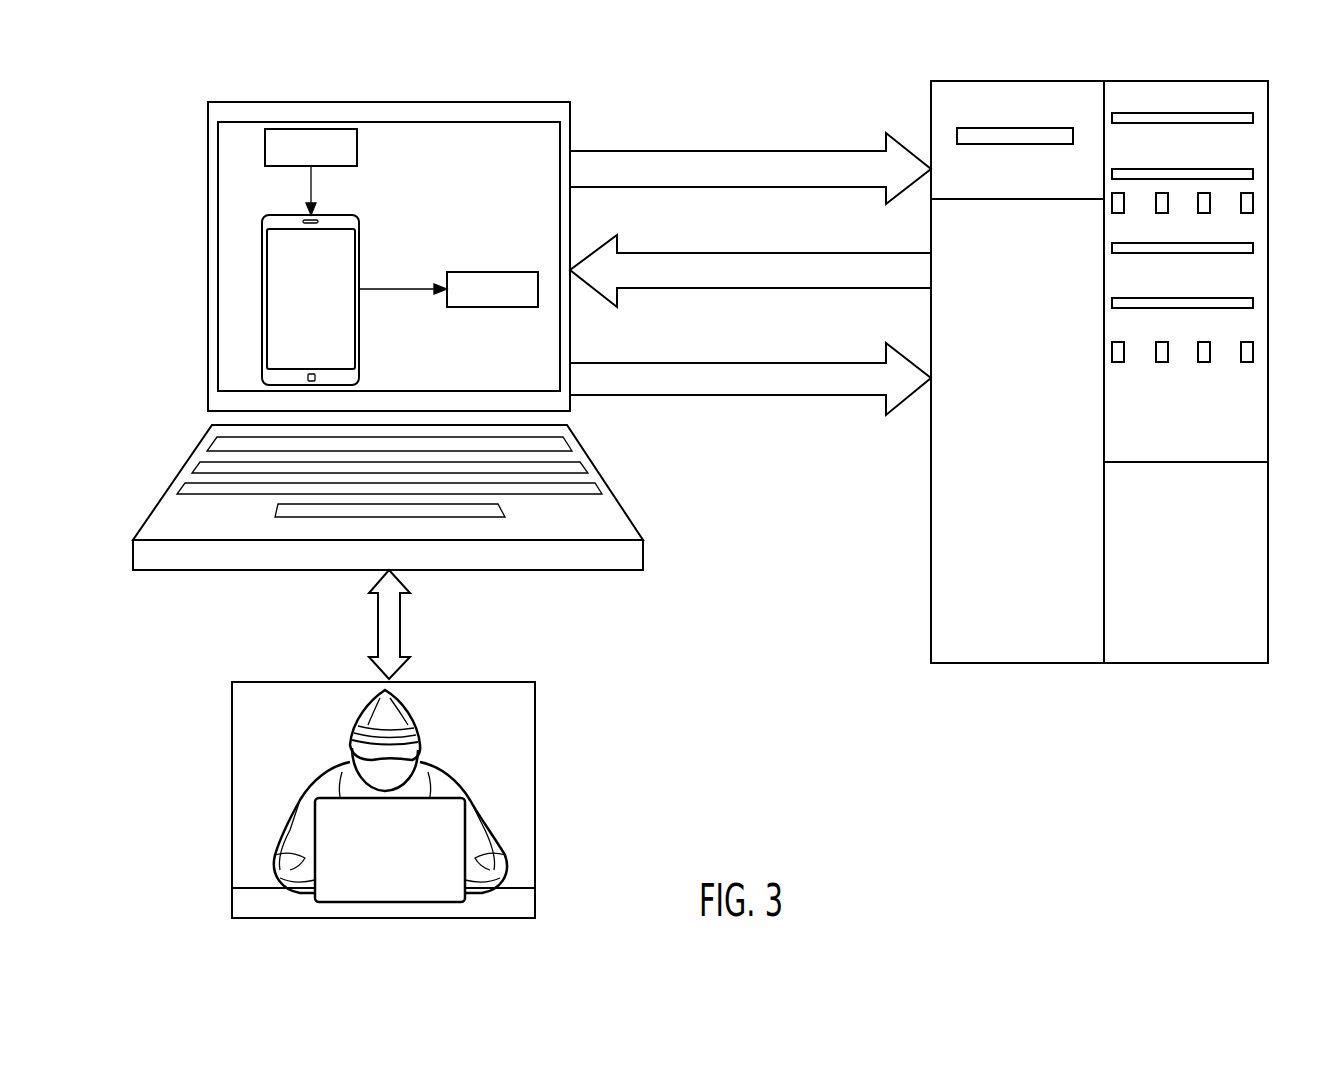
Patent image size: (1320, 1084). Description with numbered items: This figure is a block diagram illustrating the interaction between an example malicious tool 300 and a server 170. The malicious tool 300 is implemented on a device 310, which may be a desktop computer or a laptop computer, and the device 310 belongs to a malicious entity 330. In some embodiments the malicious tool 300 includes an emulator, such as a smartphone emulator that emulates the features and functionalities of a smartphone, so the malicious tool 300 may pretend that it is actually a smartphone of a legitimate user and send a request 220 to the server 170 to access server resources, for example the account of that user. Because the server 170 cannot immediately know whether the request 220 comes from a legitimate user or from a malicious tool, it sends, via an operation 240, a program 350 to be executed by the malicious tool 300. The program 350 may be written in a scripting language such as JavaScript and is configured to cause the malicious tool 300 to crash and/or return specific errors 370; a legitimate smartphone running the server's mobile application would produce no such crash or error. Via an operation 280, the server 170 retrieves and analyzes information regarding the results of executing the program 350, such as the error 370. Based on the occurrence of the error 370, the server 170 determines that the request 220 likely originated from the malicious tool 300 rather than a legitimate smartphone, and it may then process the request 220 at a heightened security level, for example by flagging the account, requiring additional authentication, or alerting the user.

The server 170 is at (1123, 664).
The request 220 is at (748, 150).
The operation 240 is at (748, 251).
The operation 280 is at (748, 360).
The malicious tool 300 is at (361, 228).
The device 310 is at (208, 187).
The malicious entity 330 is at (537, 780).
The program 350 is at (311, 172).
The error 370 is at (492, 289).